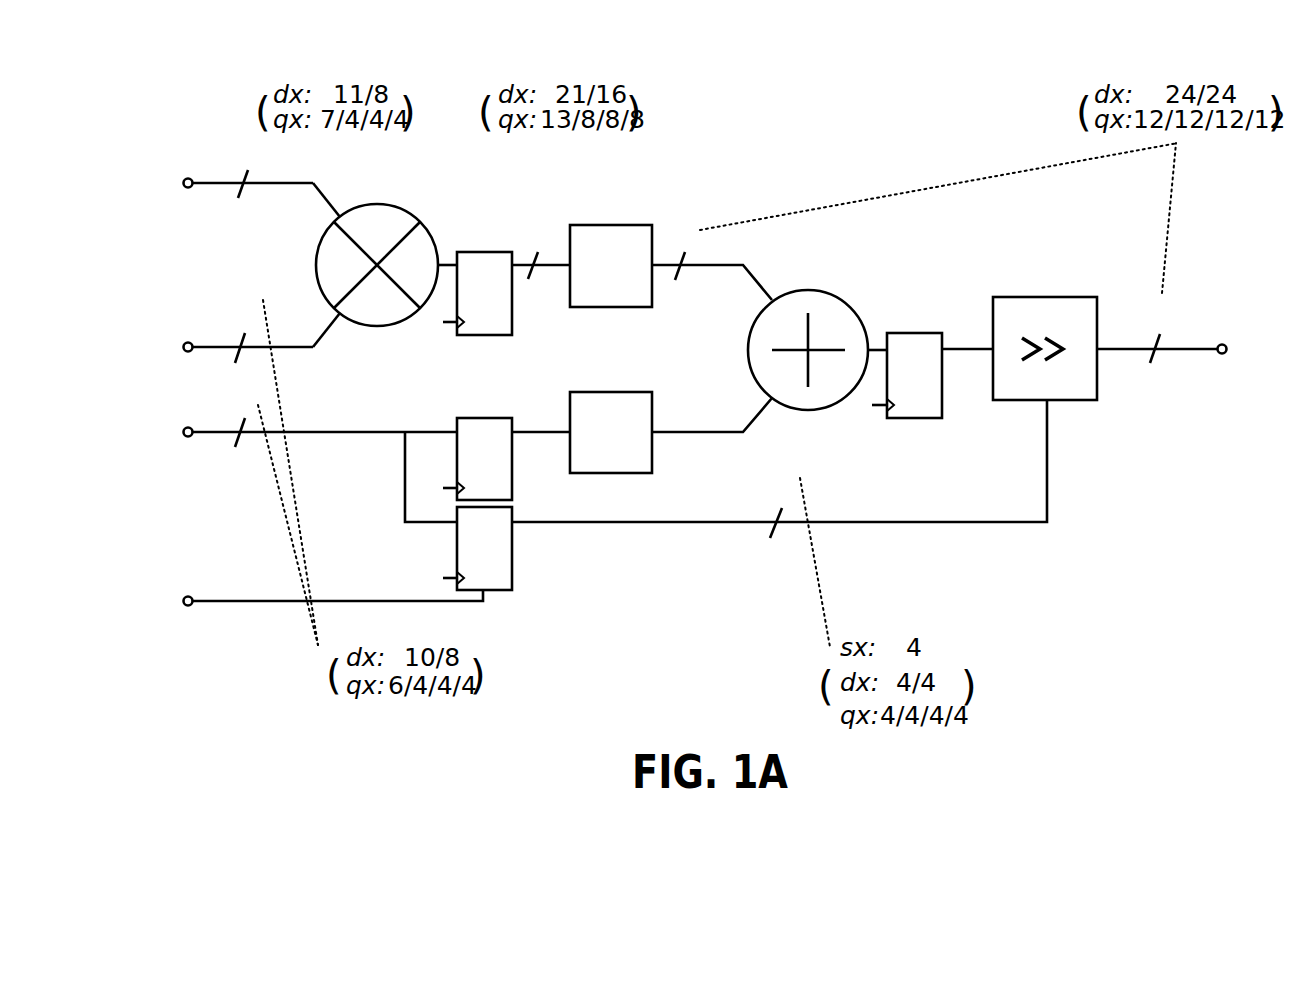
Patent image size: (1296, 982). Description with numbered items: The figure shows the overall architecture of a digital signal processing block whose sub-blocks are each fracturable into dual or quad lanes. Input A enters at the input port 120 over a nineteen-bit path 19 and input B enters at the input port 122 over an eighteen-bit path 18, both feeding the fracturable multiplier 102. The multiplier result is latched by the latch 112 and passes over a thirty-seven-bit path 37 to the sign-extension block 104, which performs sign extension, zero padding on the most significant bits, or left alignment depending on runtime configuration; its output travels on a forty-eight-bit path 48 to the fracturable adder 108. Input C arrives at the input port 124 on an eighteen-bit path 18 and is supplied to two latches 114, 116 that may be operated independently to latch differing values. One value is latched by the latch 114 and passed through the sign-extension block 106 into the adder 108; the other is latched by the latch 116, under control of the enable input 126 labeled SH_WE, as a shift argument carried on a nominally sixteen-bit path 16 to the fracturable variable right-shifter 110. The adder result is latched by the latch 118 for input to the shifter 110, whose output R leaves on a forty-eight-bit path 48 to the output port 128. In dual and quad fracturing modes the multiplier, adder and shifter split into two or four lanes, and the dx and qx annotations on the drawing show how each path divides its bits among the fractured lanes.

The fracturable multiplier 102 is at (375, 204).
The sign-extension block 104 is at (653, 230).
The sign-extension block 106 is at (652, 392).
The fracturable adder 108 is at (805, 290).
The fracturable variable right-shifter 110 is at (1043, 297).
The latch 112 is at (475, 252).
The latch 114 is at (470, 418).
The latch 116 is at (512, 567).
The latch 118 is at (917, 418).
The input port 120 is at (186, 177).
The input port 122 is at (186, 341).
The input port 124 is at (185, 427).
The enable input 126 is at (185, 596).
The output port 128 is at (1222, 343).
The nineteen-bit input A path 19 is at (247, 169).
The eighteen-bit input path 18 is at (243, 377).
The thirty-seven-bit path 37 is at (538, 252).
The forty-eight-bit path 48 is at (921, 294).
The sixteen-bit shift argument path 16 is at (782, 510).